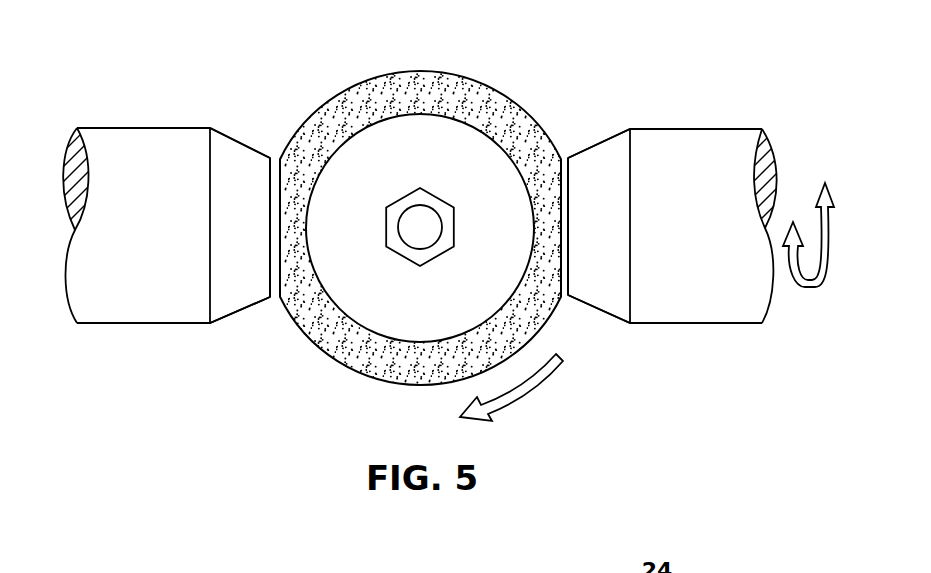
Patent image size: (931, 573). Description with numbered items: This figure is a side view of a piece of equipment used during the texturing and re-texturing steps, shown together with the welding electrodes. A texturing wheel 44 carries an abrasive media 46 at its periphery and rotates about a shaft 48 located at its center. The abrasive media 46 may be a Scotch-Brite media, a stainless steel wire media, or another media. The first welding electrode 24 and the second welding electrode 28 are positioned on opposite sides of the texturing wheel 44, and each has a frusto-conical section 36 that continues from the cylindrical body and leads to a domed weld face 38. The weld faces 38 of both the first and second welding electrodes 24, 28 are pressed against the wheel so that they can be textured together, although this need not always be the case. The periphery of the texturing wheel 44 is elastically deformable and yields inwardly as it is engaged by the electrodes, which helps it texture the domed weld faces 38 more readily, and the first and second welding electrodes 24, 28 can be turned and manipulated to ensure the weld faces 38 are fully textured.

The first welding electrode 24 is at (142, 118).
The second welding electrode 28 is at (698, 118).
The frusto-conical section 36 is at (238, 167).
The weld face 38 is at (273, 232).
The texturing wheel 44 is at (508, 88).
The abrasive media 46 is at (411, 92).
The shaft 48 is at (419, 226).